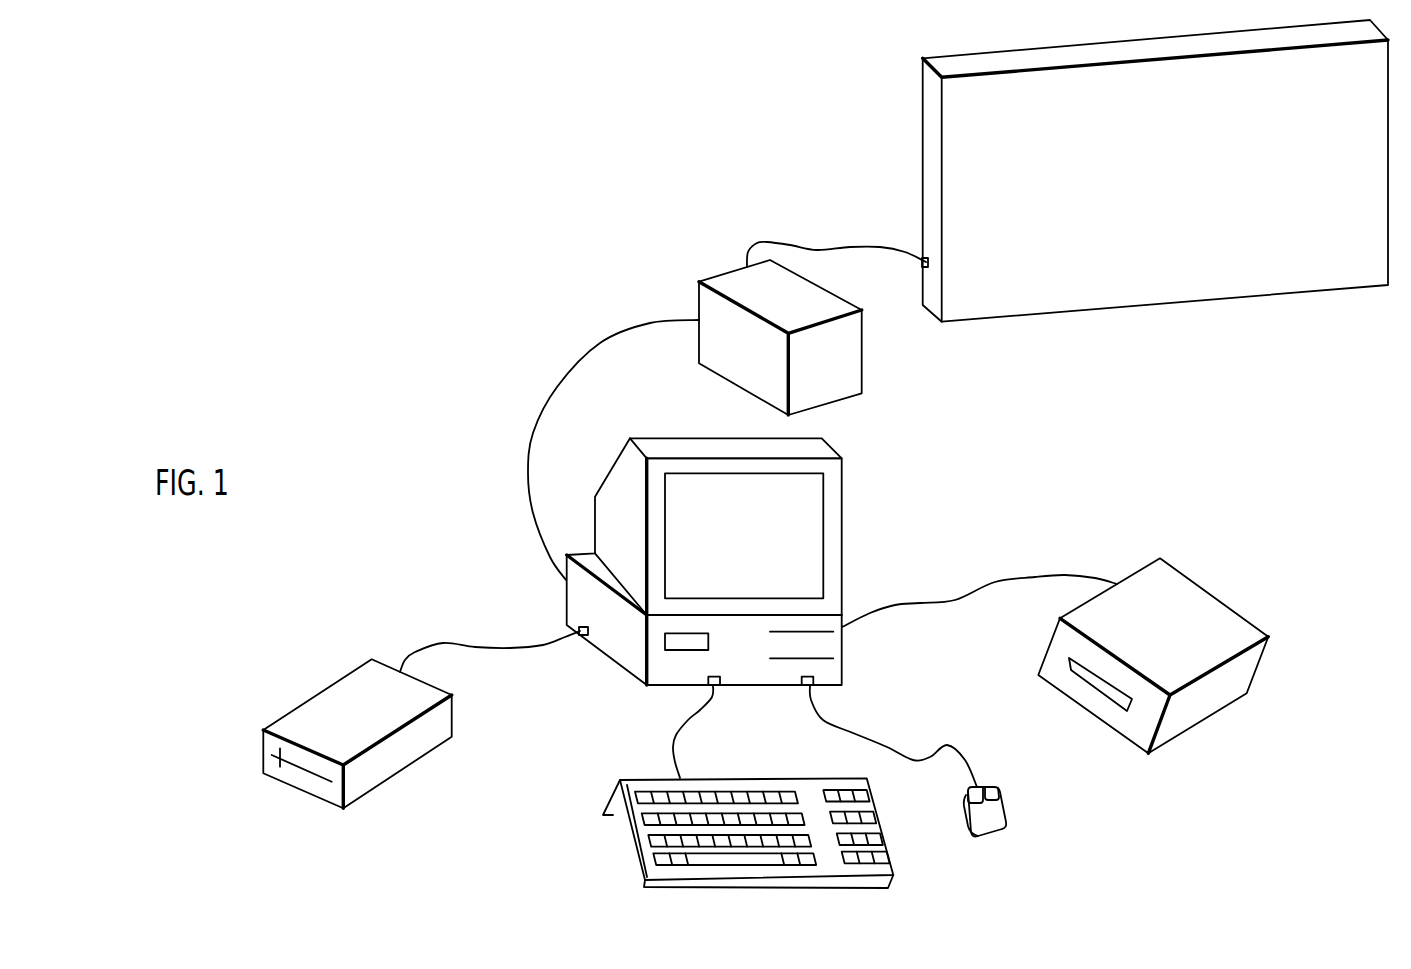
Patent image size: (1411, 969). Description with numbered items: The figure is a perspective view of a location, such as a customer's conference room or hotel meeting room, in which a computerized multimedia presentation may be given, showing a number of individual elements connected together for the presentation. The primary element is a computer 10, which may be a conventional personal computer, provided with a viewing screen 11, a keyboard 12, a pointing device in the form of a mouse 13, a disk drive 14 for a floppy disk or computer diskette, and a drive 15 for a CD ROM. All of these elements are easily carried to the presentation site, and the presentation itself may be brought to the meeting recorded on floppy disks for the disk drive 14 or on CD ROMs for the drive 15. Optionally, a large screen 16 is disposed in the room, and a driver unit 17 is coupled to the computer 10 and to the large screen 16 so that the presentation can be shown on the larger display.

The computer 10 is at (620, 648).
The viewing screen 11 is at (817, 502).
The keyboard 12 is at (763, 785).
The mouse 13 is at (998, 810).
The disk drive 14 is at (335, 693).
The drive 15 is at (1187, 587).
The large screen 16 is at (1197, 290).
The driver unit 17 is at (857, 362).